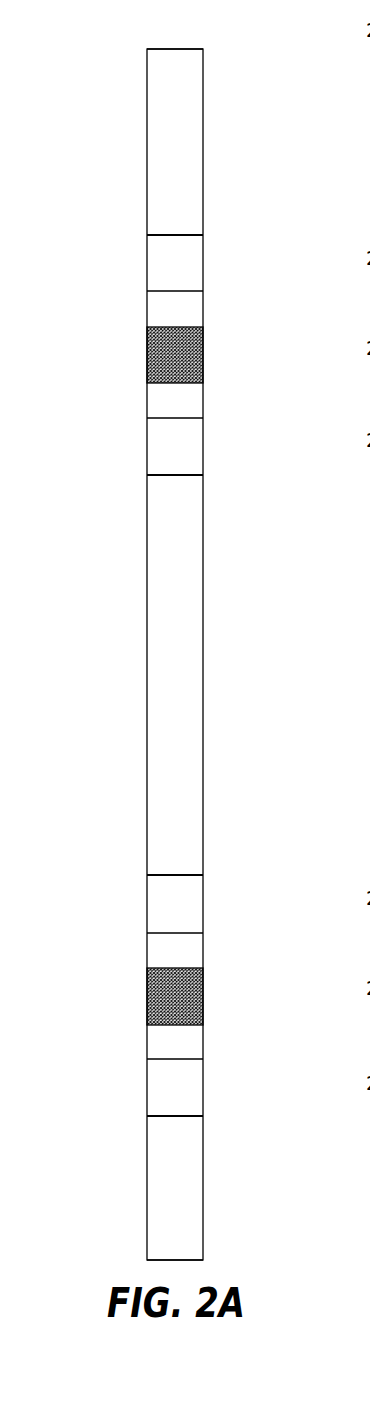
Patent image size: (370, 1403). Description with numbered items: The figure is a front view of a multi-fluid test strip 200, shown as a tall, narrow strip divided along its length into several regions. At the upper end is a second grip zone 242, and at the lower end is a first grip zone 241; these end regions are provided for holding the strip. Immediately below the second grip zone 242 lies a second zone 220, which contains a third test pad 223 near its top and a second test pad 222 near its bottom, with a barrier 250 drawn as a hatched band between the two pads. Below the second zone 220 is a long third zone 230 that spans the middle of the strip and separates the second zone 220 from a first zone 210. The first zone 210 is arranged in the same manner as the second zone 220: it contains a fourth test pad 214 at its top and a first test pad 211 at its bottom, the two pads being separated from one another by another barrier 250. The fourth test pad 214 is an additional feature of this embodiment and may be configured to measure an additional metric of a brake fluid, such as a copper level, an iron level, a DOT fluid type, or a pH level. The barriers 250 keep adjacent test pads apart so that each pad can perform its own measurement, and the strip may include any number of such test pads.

The multi-fluid test strip 200 is at (102, 68).
The second grip zone 242 is at (221, 56).
The second zone 220 is at (221, 238).
The third test pad 223 is at (157, 267).
The barriers 250 is at (157, 360).
The second test pad 222 is at (157, 443).
The third zone 230 is at (221, 478).
The first zone 210 is at (221, 882).
The fourth test pad 214 is at (163, 912).
The first test pad 211 is at (163, 1097).
The first grip zone 241 is at (221, 1116).